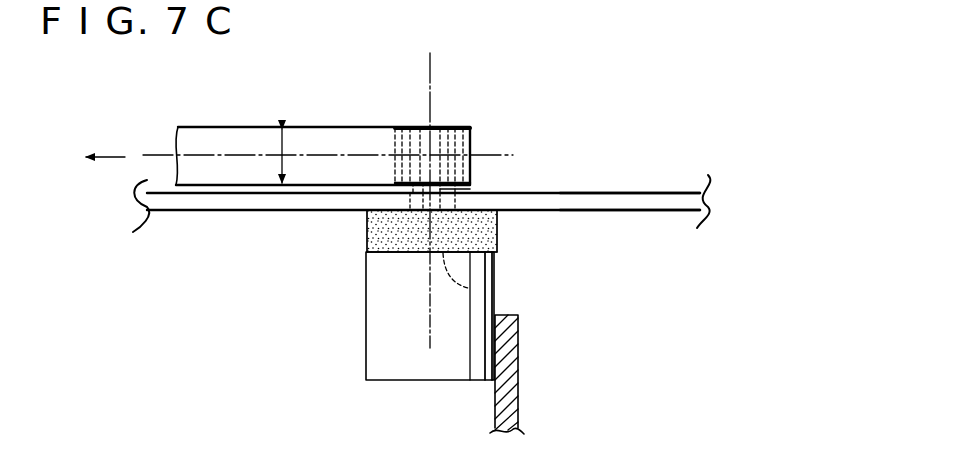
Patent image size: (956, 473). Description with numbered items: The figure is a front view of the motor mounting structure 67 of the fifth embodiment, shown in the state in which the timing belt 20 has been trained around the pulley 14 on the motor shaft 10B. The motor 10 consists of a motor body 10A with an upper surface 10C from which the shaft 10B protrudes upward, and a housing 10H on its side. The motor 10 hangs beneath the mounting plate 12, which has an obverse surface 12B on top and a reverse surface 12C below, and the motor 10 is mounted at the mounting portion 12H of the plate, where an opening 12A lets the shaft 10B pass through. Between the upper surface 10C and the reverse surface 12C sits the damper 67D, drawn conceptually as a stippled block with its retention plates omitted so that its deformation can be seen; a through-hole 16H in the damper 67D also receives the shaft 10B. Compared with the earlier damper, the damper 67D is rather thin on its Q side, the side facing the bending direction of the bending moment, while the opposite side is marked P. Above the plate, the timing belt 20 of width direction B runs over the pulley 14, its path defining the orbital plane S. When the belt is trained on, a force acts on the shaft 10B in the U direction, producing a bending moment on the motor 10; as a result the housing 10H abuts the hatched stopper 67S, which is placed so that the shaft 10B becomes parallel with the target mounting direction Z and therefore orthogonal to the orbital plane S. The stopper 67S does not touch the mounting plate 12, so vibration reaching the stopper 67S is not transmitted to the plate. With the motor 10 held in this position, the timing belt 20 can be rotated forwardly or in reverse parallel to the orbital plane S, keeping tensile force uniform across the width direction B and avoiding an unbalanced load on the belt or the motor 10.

The motor 10 is at (279, 310).
The motor body 10A is at (375, 348).
The motor shaft 10B is at (440, 189).
The upper surface of the motor body 10C is at (396, 254).
The housing of the motor 10H is at (495, 302).
The mounting plate 12 is at (704, 200).
The opening 12A is at (414, 180).
The obverse surface 12B is at (653, 193).
The reverse surface 12C is at (625, 211).
The mounting portion 12H is at (325, 203).
The pulley 14 is at (473, 143).
The through-hole 16H is at (468, 288).
The timing belt 20 is at (200, 126).
The motor mounting structure 67 is at (664, 80).
The damper 67D is at (367, 240).
The stopper 67S is at (518, 390).
The width direction B is at (282, 140).
The P side P is at (367, 230).
The Q side Q is at (497, 232).
The orbital plane S is at (504, 155).
The U direction U is at (91, 161).
The target mounting direction Z is at (430, 73).